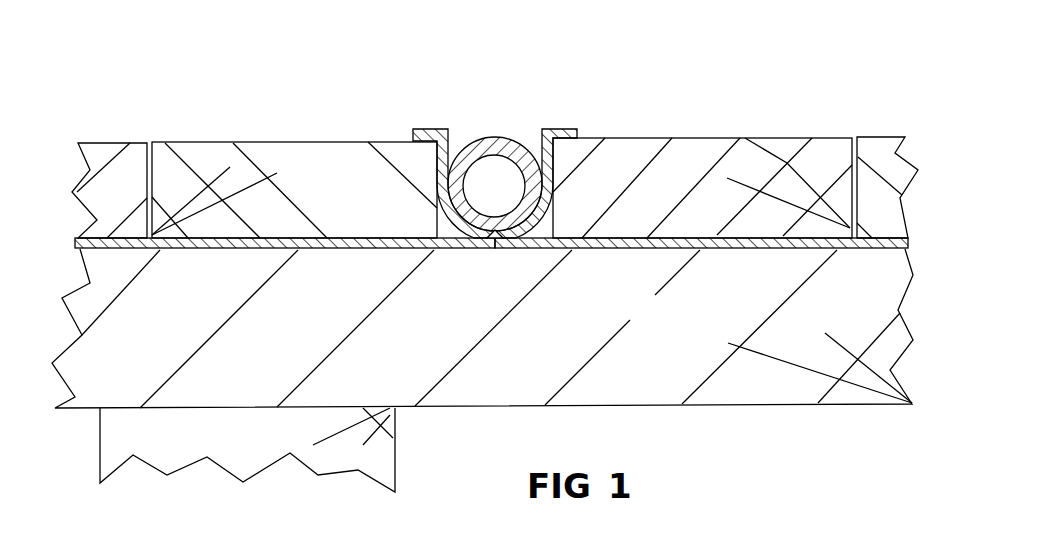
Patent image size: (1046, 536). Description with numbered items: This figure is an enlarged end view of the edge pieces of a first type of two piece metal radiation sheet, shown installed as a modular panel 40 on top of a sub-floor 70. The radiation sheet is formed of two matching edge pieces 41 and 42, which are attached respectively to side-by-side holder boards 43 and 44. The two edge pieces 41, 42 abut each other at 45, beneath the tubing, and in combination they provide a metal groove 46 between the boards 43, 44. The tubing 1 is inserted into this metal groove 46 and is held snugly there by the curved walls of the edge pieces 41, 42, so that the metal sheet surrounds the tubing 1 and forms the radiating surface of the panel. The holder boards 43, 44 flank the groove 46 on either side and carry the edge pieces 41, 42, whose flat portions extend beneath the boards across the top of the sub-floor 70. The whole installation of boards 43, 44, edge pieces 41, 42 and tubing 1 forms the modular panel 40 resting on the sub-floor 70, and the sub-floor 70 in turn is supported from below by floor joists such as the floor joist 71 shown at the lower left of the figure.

The tubing 1 is at (466, 148).
The modular panel 40 is at (630, 116).
The first edge piece 41 is at (443, 118).
The second edge piece 42 is at (553, 118).
The first holder board 43 is at (303, 142).
The second holder board 44 is at (777, 138).
The abutment point 45 is at (486, 254).
The metal groove 46 is at (507, 127).
The sub-floor 70 is at (708, 405).
The floor joist 71 is at (397, 462).